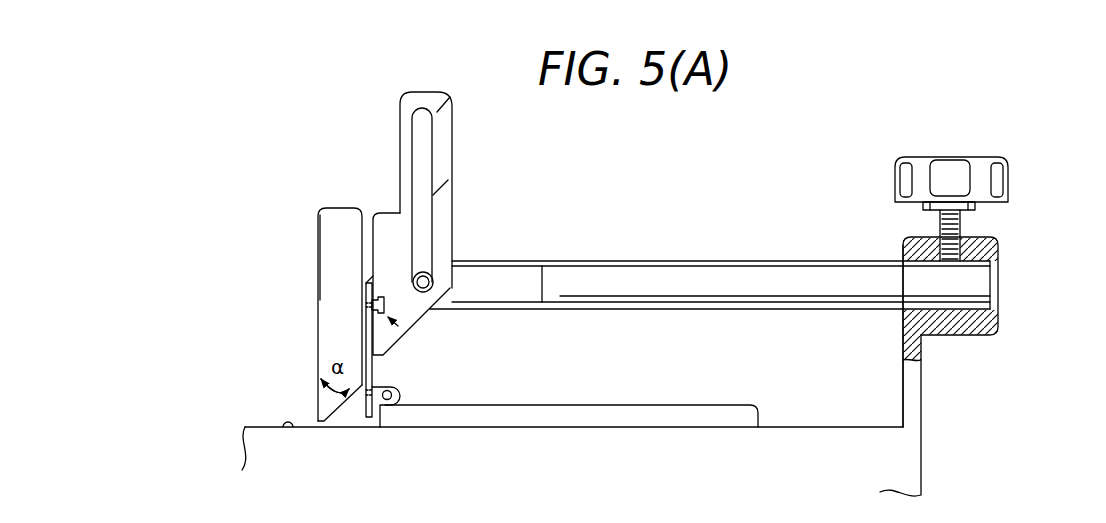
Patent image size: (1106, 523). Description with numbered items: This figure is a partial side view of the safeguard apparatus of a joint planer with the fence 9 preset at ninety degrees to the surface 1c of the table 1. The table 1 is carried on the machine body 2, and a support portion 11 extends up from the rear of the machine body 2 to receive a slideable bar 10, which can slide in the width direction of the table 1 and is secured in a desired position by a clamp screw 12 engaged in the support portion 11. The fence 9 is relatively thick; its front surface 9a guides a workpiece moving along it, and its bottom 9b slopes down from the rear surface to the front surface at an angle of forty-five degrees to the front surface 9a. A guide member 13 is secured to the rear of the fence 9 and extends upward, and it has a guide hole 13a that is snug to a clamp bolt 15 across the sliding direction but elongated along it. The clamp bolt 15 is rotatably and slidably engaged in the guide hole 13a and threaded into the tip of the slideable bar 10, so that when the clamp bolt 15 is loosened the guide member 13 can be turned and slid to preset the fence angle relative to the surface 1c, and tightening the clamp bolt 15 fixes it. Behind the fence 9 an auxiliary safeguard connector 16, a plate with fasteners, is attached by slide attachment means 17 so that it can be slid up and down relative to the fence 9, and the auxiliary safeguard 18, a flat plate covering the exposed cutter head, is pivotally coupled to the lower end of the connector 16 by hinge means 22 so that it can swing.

The table 1 is at (252, 420).
The surface of table 1c is at (293, 432).
The machine body 2 is at (925, 455).
The fence 9 is at (316, 231).
The front surface 9a is at (318, 264).
The bottom 9b is at (350, 422).
The slideable bar 10 is at (686, 261).
The support portion 11 is at (998, 245).
The clamp screw 12 is at (948, 157).
The guide member 13 is at (400, 111).
The guide hole 13a is at (430, 150).
The clamp bolt 15 is at (430, 272).
The auxiliary safeguard connector 16 is at (373, 277).
The slide attachment means 17 is at (408, 330).
The auxiliary safeguard 18 is at (567, 405).
The hinge means 22 is at (400, 392).